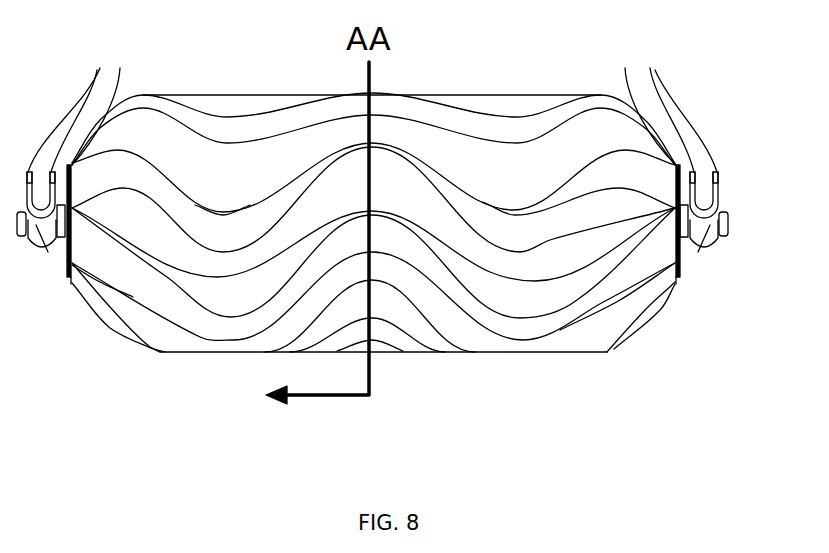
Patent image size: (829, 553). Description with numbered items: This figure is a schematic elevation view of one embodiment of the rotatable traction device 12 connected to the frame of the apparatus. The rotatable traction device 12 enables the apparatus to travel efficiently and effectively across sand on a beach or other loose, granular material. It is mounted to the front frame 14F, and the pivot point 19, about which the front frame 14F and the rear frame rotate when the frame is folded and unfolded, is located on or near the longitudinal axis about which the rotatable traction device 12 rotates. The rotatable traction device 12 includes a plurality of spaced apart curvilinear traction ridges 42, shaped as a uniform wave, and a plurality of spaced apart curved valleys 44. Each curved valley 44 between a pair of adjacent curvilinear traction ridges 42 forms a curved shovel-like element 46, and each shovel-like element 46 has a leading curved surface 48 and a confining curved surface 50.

The rotatable traction device 12 is at (177, 351).
The front frame 14F is at (692, 127).
The pivot point 19 is at (728, 224).
The curvilinear traction ridge 42 is at (477, 202).
The curved valley 44 is at (310, 225).
The shovel-like element 46 is at (262, 286).
The leading curved surface 48 is at (226, 308).
The confining curved surface 50 is at (226, 274).